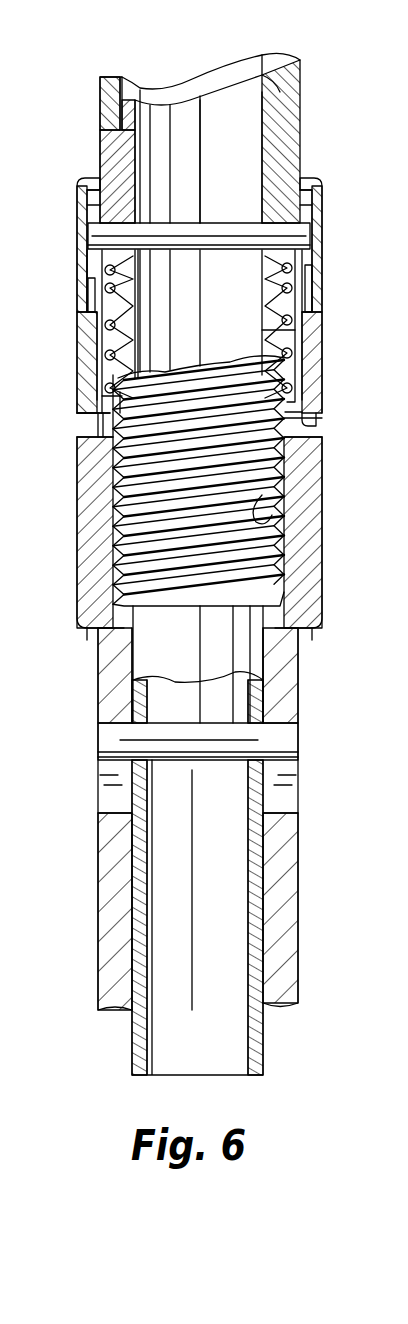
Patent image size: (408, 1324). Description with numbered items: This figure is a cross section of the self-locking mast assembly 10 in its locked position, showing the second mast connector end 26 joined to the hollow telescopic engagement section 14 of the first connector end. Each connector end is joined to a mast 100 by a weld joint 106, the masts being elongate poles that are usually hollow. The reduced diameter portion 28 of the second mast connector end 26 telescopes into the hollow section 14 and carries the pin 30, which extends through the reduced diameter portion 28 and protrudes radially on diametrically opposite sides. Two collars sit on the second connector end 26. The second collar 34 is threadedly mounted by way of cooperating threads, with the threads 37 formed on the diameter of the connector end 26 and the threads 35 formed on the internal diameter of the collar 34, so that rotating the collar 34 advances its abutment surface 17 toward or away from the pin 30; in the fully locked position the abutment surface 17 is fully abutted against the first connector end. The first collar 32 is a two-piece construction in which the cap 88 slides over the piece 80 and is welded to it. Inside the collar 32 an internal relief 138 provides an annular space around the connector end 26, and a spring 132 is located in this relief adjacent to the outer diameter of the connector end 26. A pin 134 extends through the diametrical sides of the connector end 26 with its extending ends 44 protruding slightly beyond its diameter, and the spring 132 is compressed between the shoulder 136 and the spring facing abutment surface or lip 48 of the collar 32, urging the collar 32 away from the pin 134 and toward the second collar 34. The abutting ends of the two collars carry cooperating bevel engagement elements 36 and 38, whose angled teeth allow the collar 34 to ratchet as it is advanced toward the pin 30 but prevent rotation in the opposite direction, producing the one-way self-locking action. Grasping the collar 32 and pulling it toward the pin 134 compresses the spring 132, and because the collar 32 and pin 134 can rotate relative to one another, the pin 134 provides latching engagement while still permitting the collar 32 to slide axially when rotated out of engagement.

The self-locking mast assembly 10 is at (46, 175).
The hollow diameter telescopic engagement section 14 is at (98, 828).
The abutment surface 17 is at (83, 630).
The second mast connector end 26 is at (229, 108).
The reduced diameter portion 28 is at (130, 1045).
The pin 30 is at (300, 744).
The first collar 32 is at (77, 342).
The second collar 34 is at (312, 510).
The threads of the collar 35 is at (262, 498).
The bevel engagement element 36 is at (322, 430).
The threads of the mast connector end 37 is at (286, 341).
The bevel engagement element 38 is at (322, 425).
The extending ends of the pin 44 is at (312, 225).
The spring facing abutment surface 48 is at (100, 418).
The piece 80 is at (312, 334).
The cap 88 is at (78, 300).
The mast 100 is at (100, 100).
The weld joint 106 is at (107, 162).
The spring 132 is at (115, 358).
The pin 134 is at (228, 240).
The shoulder 136 is at (302, 263).
The internal relief 138 is at (108, 276).